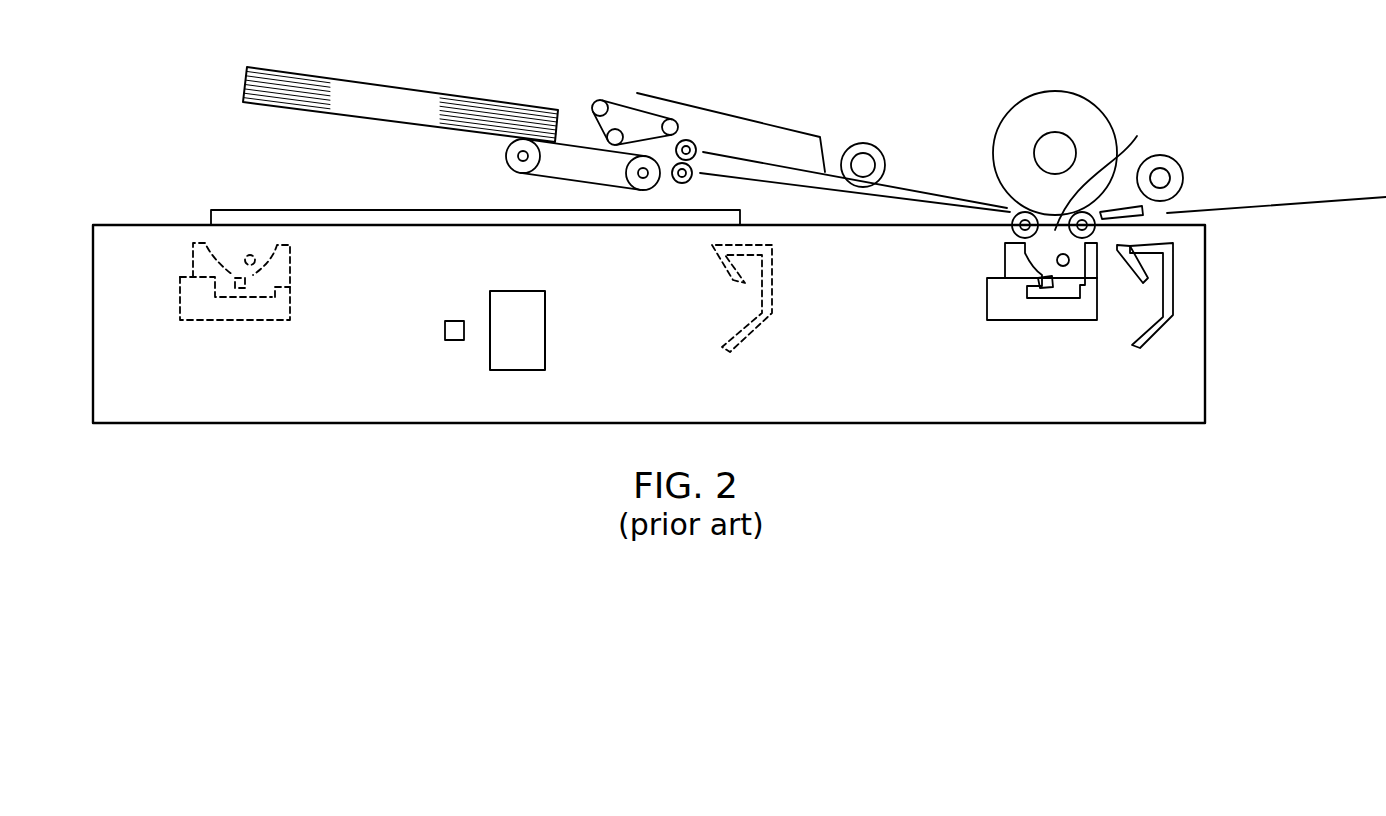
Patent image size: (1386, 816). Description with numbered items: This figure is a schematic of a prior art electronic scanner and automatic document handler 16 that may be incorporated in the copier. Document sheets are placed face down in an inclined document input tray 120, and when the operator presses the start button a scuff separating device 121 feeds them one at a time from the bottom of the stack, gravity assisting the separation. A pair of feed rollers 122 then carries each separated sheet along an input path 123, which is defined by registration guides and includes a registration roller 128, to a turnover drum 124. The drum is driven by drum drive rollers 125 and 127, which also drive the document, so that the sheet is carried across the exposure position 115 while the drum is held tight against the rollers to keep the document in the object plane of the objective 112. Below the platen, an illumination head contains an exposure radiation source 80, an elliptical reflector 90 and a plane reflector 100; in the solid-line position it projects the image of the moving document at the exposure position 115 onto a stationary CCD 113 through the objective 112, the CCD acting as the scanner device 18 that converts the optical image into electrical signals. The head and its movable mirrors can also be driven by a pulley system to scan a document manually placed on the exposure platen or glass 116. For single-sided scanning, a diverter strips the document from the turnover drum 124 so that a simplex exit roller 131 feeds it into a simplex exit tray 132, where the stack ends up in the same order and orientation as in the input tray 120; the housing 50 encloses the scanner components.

The document supply or input tray 120 is at (343, 115).
The scuff separating device 121 is at (583, 122).
The feed rollers 122 is at (700, 147).
The document handler 16 is at (800, 108).
The input path 123 is at (811, 185).
The registration roller 128 is at (878, 142).
The turnover drum 124 is at (1091, 103).
The exposure position 115 is at (1112, 169).
The drum drive roller 127 is at (1010, 232).
The simplex exit roller 131 is at (1175, 155).
The simplex exit tray 132 is at (1345, 200).
The exposure platen or glass 116 is at (240, 211).
The CCD 113 is at (450, 342).
The objective 112 is at (547, 348).
The plane reflector 100 is at (987, 300).
The elliptical reflector 90 is at (1065, 268).
The exposure radiation source 80 is at (1047, 291).
The drum drive roller 125 is at (1143, 283).
The imager or scanner device 18 is at (946, 373).
The housing 50 is at (1137, 410).